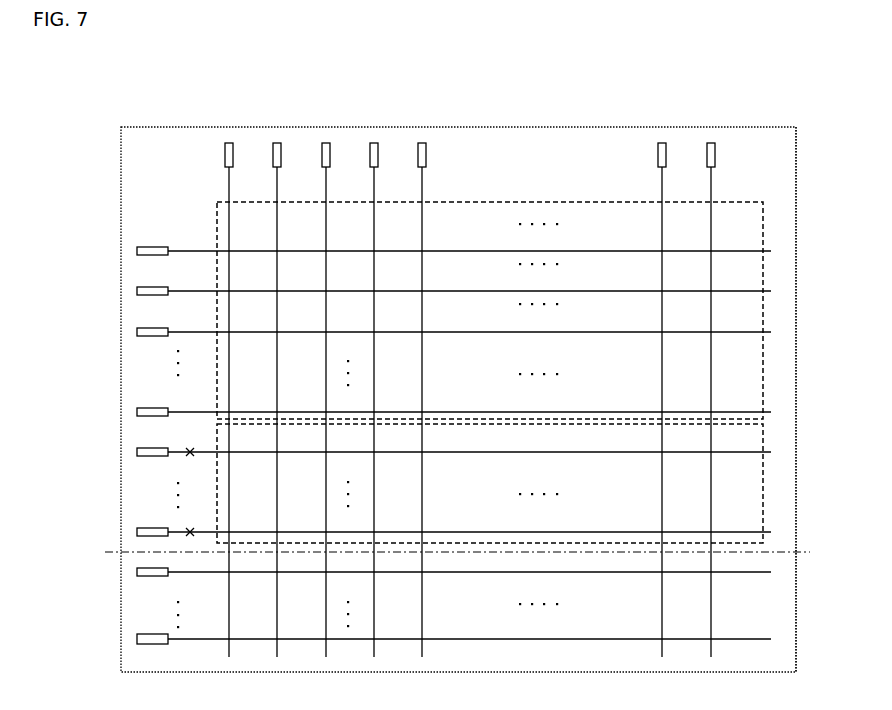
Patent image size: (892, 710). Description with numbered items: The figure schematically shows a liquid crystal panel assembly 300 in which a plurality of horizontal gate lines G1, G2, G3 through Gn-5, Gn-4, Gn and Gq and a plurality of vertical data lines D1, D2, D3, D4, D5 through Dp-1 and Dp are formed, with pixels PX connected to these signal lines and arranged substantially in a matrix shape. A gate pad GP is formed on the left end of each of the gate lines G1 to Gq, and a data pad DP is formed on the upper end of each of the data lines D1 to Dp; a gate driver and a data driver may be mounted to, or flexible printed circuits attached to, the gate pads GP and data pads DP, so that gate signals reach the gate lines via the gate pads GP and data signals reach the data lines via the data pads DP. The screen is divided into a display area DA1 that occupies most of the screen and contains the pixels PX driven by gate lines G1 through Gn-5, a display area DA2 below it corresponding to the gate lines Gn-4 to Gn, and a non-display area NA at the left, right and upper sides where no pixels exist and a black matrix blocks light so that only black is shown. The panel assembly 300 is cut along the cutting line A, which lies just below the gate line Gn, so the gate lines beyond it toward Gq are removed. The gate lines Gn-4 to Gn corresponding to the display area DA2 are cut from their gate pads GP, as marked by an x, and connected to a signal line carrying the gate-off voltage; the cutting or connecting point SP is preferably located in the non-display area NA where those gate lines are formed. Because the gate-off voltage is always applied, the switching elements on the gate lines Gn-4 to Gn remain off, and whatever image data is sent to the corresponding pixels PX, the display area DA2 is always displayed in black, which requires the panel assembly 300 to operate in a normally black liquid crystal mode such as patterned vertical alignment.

The liquid crystal panel assembly 300 is at (172, 127).
The non-display area NA is at (757, 170).
The display area DA1 is at (763, 308).
The display area DA2 is at (763, 485).
The data pad DP is at (277, 143).
The gate pad GP is at (152, 289).
The cutting point and/or connecting point SP is at (187, 458).
The pixel PX is at (326, 272).
The data line D1 is at (216, 412).
The data line D2 is at (264, 412).
The data line D3 is at (313, 412).
The data line D4 is at (361, 412).
The data line D5 is at (409, 412).
The data line Dp-1 is at (642, 412).
The data line Dp is at (698, 412).
The gate line G1 is at (469, 241).
The gate line G2 is at (469, 281).
The gate line G3 is at (469, 322).
The gate line Gn-5 is at (469, 401).
The gate line Gn-4 is at (469, 441).
The gate line Gn is at (469, 520).
The gate line Gq is at (469, 650).
The cutting line A is at (455, 554).